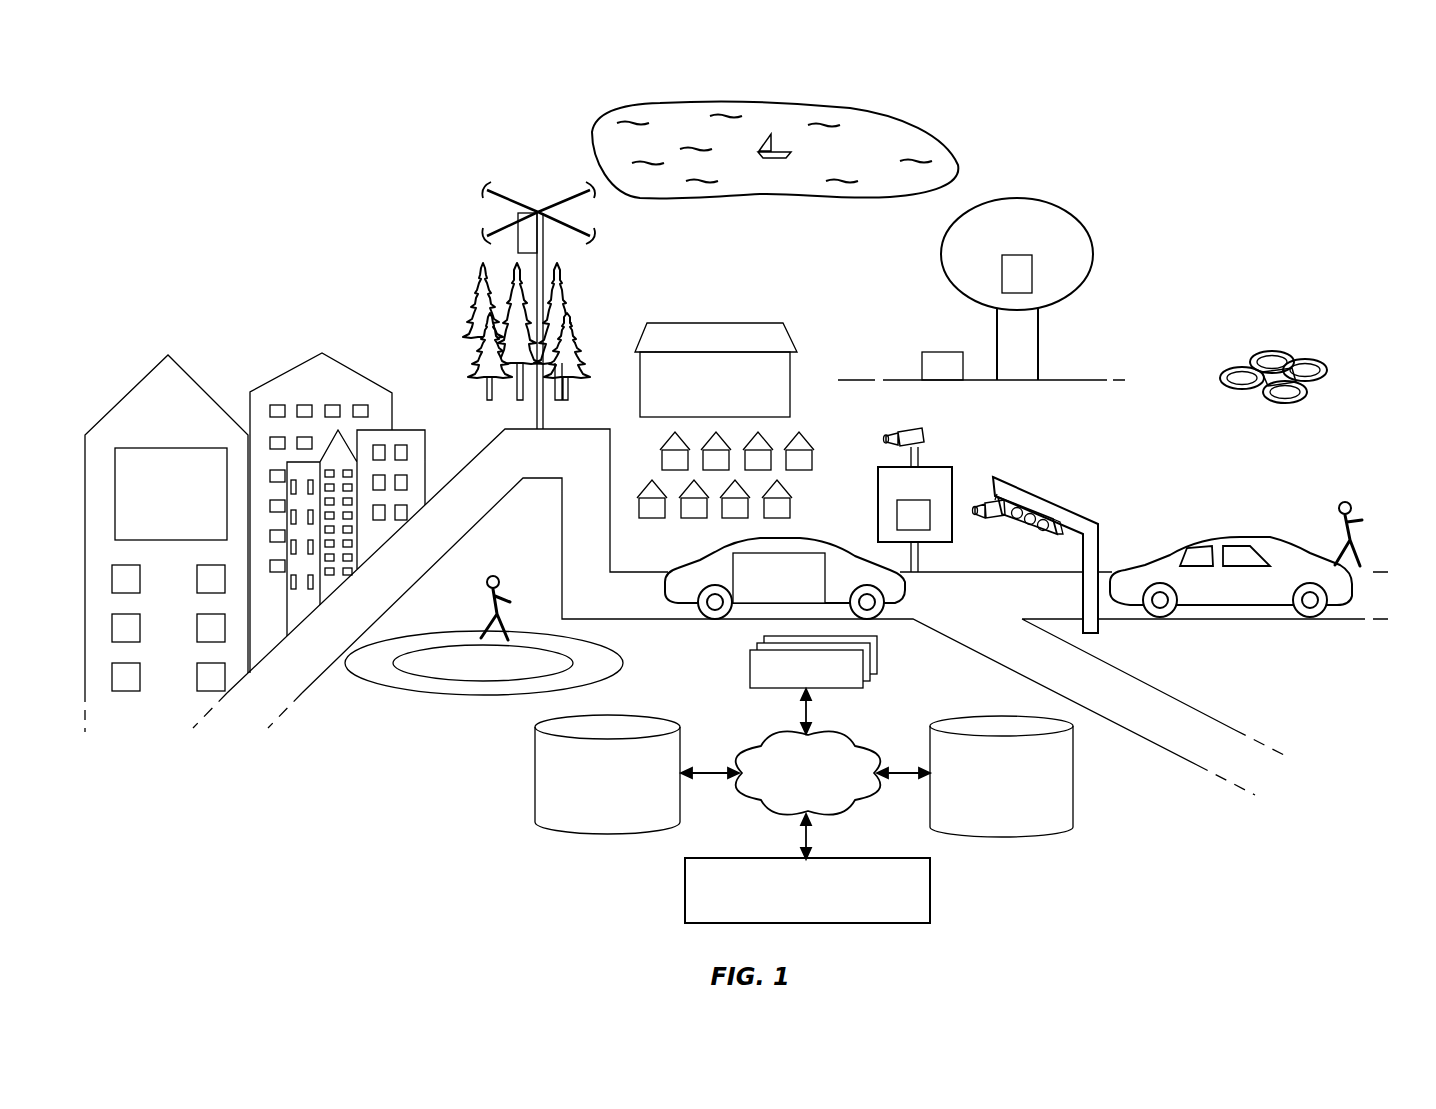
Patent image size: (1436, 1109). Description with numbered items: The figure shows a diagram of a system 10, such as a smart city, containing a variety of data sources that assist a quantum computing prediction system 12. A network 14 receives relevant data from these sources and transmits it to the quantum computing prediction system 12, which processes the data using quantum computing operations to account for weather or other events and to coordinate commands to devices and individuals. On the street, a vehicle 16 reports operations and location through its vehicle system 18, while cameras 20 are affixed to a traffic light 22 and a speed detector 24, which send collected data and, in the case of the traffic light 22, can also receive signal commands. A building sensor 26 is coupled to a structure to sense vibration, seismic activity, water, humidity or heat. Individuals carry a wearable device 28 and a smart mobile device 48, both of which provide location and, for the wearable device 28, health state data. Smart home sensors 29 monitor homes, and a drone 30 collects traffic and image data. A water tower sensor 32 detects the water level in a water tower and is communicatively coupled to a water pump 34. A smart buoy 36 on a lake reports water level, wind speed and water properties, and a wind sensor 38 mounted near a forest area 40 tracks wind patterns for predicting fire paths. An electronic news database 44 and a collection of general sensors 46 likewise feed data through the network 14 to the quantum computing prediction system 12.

The system 10 is at (210, 125).
The quantum computing prediction system 12 is at (930, 886).
The network 14 is at (778, 738).
The vehicle 16 is at (776, 567).
The vehicle system 18 is at (780, 553).
The camera 20 is at (910, 430).
The traffic light 22 is at (1028, 531).
The speed detector 24 is at (878, 501).
The building sensor 26 is at (172, 448).
The wearable device 28 is at (497, 573).
The smart home sensor 29 is at (715, 323).
The drone 30 is at (1273, 352).
The water tower sensor 32 is at (1033, 275).
The water pump 34 is at (942, 352).
The smart buoy 36 is at (766, 140).
The wind sensor 38 is at (533, 178).
The forest area 40 is at (455, 300).
The electronic news database 44 is at (606, 715).
The sensors 46 is at (749, 666).
The smart mobile device 48 is at (1342, 497).